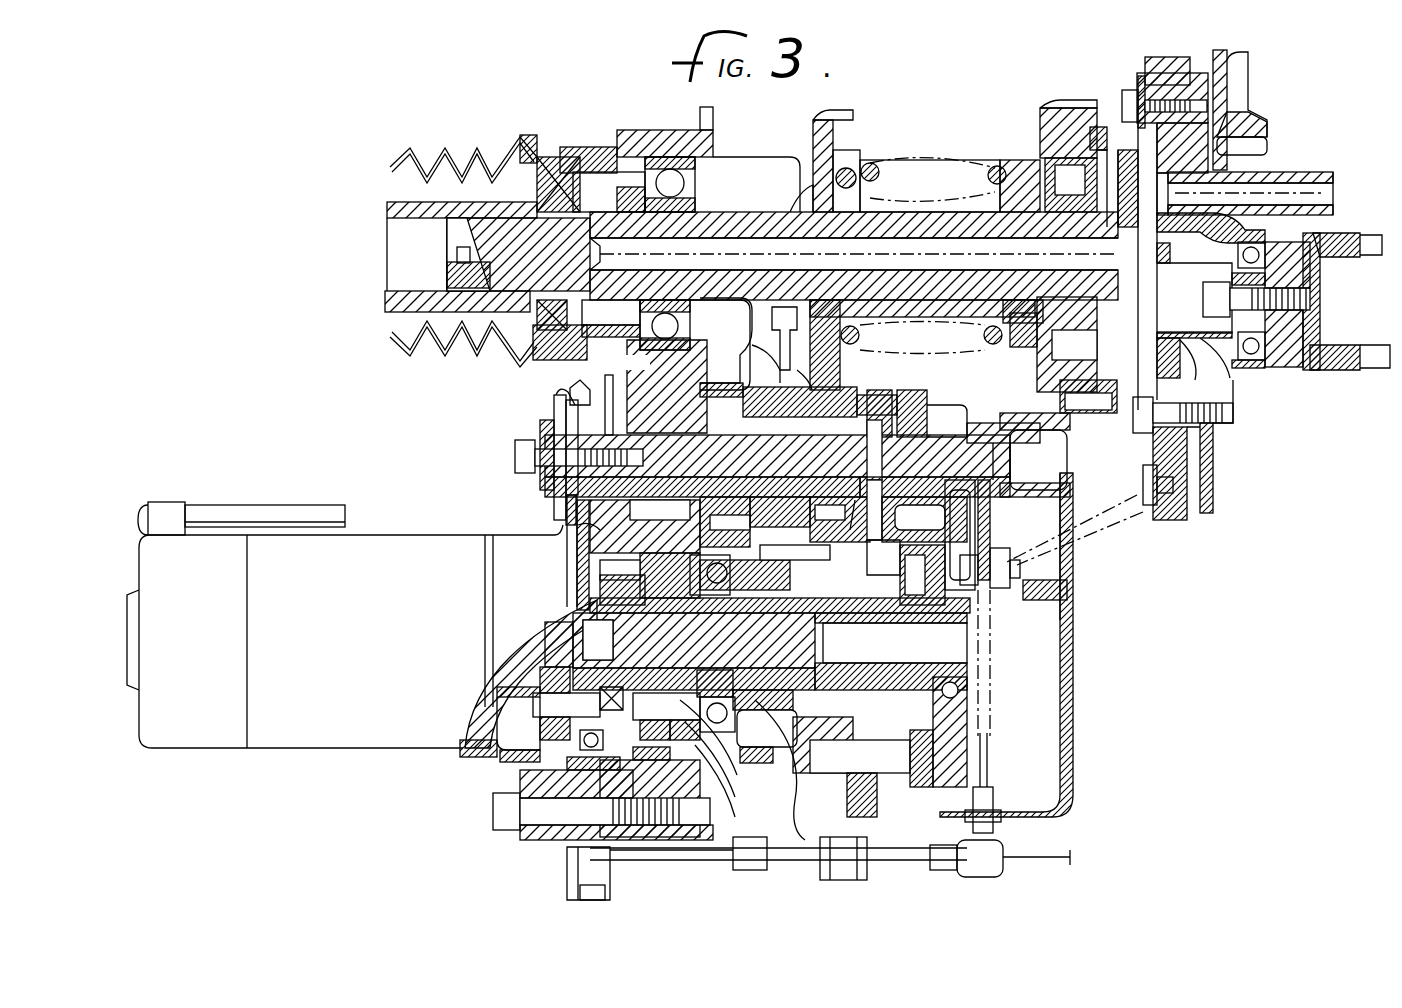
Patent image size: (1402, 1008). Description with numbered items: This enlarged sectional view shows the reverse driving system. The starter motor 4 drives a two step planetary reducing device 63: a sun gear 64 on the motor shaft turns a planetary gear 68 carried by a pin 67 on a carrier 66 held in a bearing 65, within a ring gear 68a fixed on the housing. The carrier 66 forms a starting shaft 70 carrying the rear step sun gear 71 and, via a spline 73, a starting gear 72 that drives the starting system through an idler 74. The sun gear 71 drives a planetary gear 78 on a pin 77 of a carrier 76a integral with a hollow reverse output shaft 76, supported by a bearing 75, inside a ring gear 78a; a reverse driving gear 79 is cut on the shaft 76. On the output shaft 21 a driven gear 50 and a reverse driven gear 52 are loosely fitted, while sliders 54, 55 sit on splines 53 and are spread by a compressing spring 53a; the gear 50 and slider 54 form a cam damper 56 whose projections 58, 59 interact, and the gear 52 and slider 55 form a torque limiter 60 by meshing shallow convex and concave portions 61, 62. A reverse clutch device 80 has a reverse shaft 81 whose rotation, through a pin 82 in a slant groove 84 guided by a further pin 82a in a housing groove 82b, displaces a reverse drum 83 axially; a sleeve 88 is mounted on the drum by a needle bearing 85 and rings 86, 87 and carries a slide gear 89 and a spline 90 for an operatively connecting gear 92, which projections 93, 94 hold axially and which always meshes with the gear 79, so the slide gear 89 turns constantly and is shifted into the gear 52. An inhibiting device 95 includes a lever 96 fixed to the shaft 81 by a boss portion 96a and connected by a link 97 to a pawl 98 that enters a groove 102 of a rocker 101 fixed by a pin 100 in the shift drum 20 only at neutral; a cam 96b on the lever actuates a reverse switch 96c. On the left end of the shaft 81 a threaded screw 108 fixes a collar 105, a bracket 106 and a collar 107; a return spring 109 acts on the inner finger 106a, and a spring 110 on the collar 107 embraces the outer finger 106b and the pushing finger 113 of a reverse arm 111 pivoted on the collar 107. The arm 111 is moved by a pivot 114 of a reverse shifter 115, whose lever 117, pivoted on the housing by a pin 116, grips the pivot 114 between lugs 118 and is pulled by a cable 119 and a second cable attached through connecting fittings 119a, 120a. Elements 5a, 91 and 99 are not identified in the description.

The starter motor 4 is at (263, 757).
The shift drum 20 is at (1357, 362).
The output shaft 21 is at (525, 205).
The driven gear 50 is at (1085, 110).
The reverse driven gear 52 is at (848, 112).
The splines 53 is at (942, 196).
The compressing spring 53a is at (872, 170).
The slider 54 is at (1015, 176).
The slider 55 is at (814, 178).
The cam damper 56 is at (1047, 148).
The projection 58 is at (1048, 340).
The projection 59 is at (1040, 200).
The torque limiter 60 is at (835, 352).
The convex and concave portions 61 is at (842, 165).
The convex and concave portions 62 is at (783, 340).
The two step planetary reducing device 63 is at (525, 833).
The sun gear 64 is at (525, 640).
The bearing 65 is at (520, 805).
The carrier 66 is at (577, 598).
The pin 67 is at (533, 687).
The planetary gear 68 is at (510, 738).
The ring gear 68a is at (525, 758).
The starting shaft 70 is at (770, 690).
The sun gear 71 is at (653, 600).
The starting gear 72 is at (865, 605).
The spline 73 is at (850, 640).
The idler 74 is at (877, 808).
The bearing 75 is at (735, 728).
The reverse output shaft 76 is at (730, 578).
The carrier 76a is at (660, 568).
The pin 77 is at (722, 744).
The planetary gear 78 is at (724, 765).
The ring gear 78a is at (750, 770).
The reverse driving gear 79 is at (790, 692).
The reverse clutch device 80 is at (610, 318).
The reverse shaft 81 is at (957, 490).
The pin 82 is at (882, 497).
The pin 82a is at (940, 407).
The groove 82b is at (920, 395).
The reverse drum 83 is at (807, 388).
The slant groove 84 is at (868, 530).
The needle bearing 85 is at (766, 507).
The ring 86 is at (880, 410).
The ring 87 is at (728, 418).
The sleeve 88 is at (830, 537).
The slide gear 89 is at (875, 395).
The spline 90 is at (748, 380).
The ring 91 is at (770, 385).
The operatively connecting gear 92 is at (790, 570).
The projection 93 is at (716, 355).
The projection 94 is at (800, 530).
The inhibiting device 95 is at (1081, 552).
The lever 96 is at (992, 520).
The boss portion 96a is at (1000, 428).
The cam 96b is at (992, 765).
The reverse switch 96c is at (993, 800).
The link 97 is at (1097, 528).
The pawl 98 is at (1213, 420).
The bolt 99 is at (1203, 298).
The pin 100 is at (1267, 262).
The rocker 101 is at (1245, 360).
The groove 102 is at (1225, 368).
The collar 105 is at (777, 450).
The bracket 106 is at (560, 410).
The inner finger portion 106a is at (580, 527).
The outer finger 106b is at (554, 398).
The collar 107 is at (543, 487).
The threaded screw 108 is at (515, 462).
The return spring 109 is at (560, 512).
The spring 110 is at (540, 428).
The reverse arm 111 is at (540, 560).
The pushing finger 113 is at (568, 392).
The pivot 114 is at (600, 883).
The reverse shifter 115 is at (778, 872).
The pin 116 is at (848, 882).
The lever 117 is at (710, 868).
The lugs 118 is at (598, 902).
The cable 119 is at (1050, 862).
The connecting fitting 119a is at (980, 880).
The connecting fitting 120a is at (748, 875).
The pin 5a is at (607, 412).